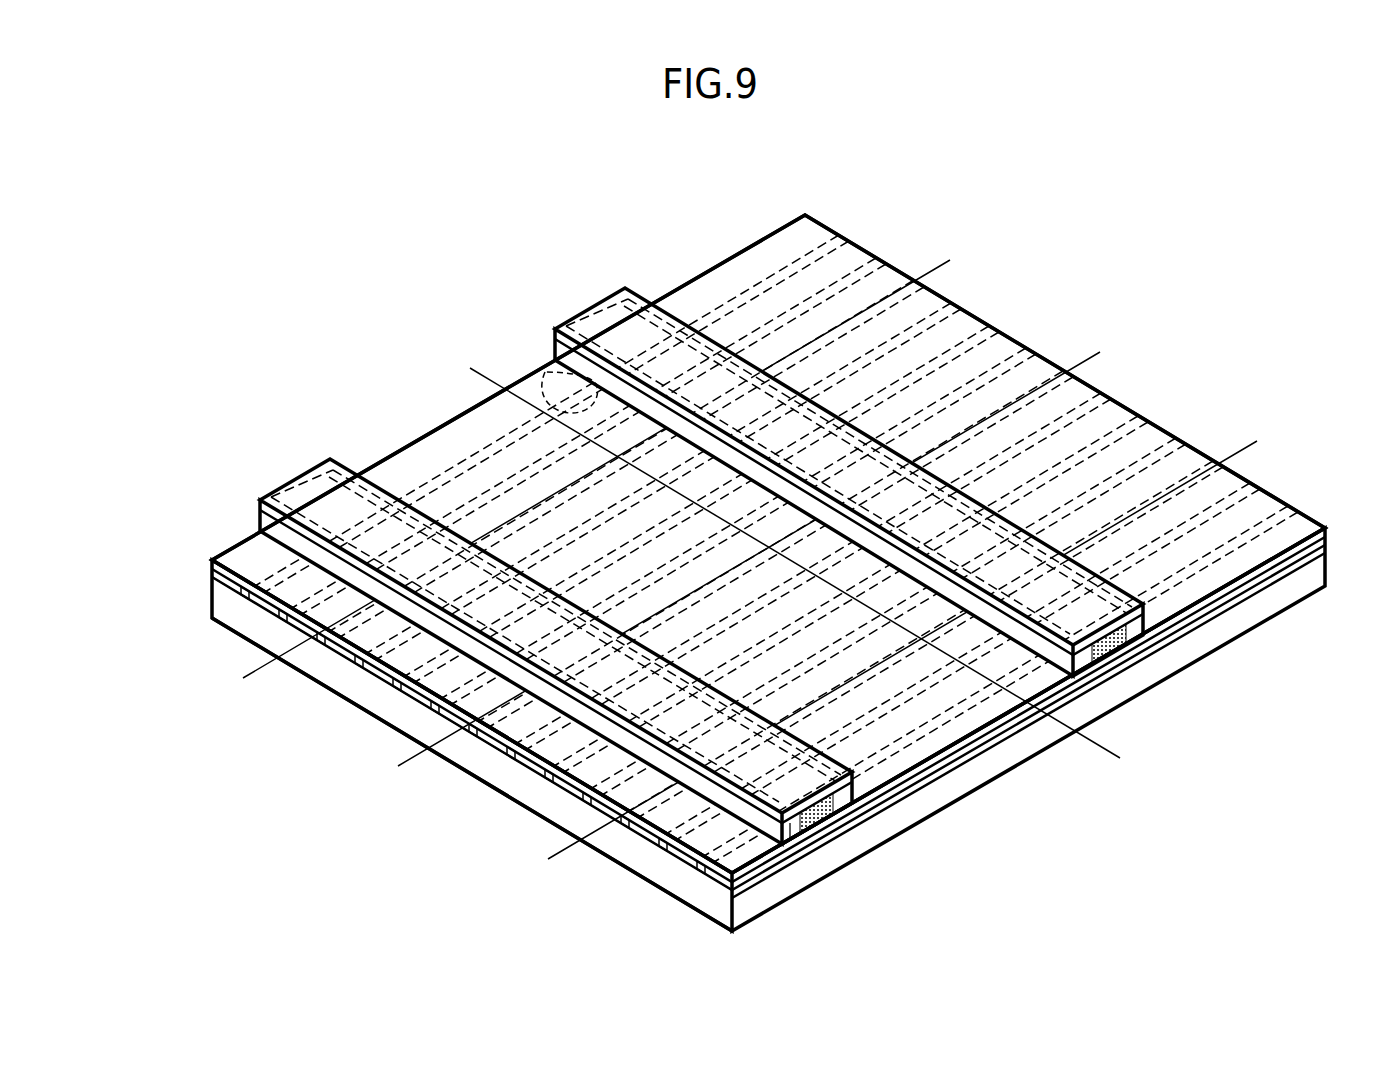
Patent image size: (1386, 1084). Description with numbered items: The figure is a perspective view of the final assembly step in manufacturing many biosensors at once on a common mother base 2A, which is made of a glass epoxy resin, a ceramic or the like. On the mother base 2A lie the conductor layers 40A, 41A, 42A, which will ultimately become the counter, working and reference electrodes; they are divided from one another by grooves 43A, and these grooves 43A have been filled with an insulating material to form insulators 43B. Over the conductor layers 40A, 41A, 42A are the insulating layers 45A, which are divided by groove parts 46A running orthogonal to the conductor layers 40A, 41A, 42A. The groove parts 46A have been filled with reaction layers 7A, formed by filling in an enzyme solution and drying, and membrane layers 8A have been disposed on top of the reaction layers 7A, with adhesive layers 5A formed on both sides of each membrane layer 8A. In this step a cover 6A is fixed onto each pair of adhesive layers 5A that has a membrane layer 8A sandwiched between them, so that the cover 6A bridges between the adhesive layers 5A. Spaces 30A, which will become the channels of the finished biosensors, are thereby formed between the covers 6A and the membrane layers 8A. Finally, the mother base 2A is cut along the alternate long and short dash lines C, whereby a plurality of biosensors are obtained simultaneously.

The mother base 2A is at (1198, 648).
The adhesive layers 5A is at (697, 345).
The cover 6A is at (622, 290).
The reaction layers 7A is at (828, 834).
The membrane layers 8A is at (857, 792).
The spaces 30A is at (870, 798).
The conductor layers 40A is at (298, 627).
The conductor layers 41A is at (247, 590).
The conductor layers 42A is at (213, 600).
The grooves 43A is at (542, 772).
The insulators 43B is at (535, 372).
The insulating layers 45A is at (818, 232).
The groove parts 46A is at (815, 832).
The alternate long and short dash lines C is at (762, 550).